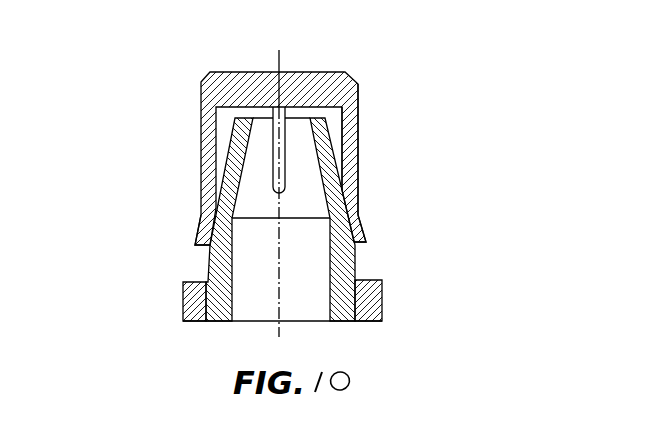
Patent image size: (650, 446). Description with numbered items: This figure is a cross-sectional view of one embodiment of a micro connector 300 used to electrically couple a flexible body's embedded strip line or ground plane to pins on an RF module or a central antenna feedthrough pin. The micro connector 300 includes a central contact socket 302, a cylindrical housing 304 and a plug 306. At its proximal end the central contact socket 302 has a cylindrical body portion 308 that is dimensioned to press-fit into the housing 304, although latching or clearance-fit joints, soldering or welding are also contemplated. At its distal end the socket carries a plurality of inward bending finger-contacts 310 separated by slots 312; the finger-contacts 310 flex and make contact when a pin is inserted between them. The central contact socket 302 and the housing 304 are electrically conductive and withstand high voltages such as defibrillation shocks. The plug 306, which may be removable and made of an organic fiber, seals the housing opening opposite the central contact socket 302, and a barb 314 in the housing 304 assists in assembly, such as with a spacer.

The micro connector 300 is at (158, 100).
The central contact socket 302 is at (343, 128).
The cylindrical housing 304 is at (365, 228).
The plug 306 is at (310, 72).
The cylindrical body portion 308 is at (252, 283).
The finger-contacts 310 is at (305, 186).
The slots 312 is at (273, 167).
The barb 314 is at (358, 262).